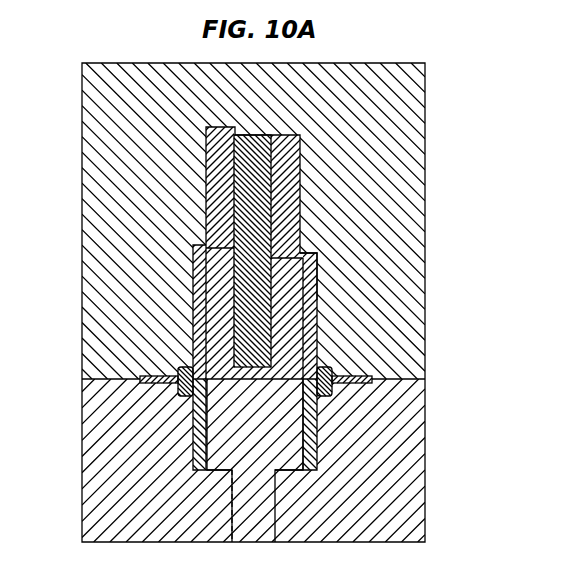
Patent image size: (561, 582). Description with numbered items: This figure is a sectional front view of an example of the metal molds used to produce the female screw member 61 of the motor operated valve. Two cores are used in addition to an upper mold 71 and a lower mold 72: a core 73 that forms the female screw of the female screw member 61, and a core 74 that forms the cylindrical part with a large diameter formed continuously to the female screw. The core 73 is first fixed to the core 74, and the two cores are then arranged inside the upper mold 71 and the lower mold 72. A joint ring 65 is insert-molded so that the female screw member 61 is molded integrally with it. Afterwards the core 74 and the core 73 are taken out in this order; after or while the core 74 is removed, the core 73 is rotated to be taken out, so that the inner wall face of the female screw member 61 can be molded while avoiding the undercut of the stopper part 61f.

The upper mold 71 is at (426, 118).
The lower mold 72 is at (427, 445).
The female screw member 61 is at (317, 308).
The stopper part 61f is at (317, 257).
The core 73 is at (271, 285).
The core 74 is at (263, 433).
The joint ring 65 is at (148, 376).